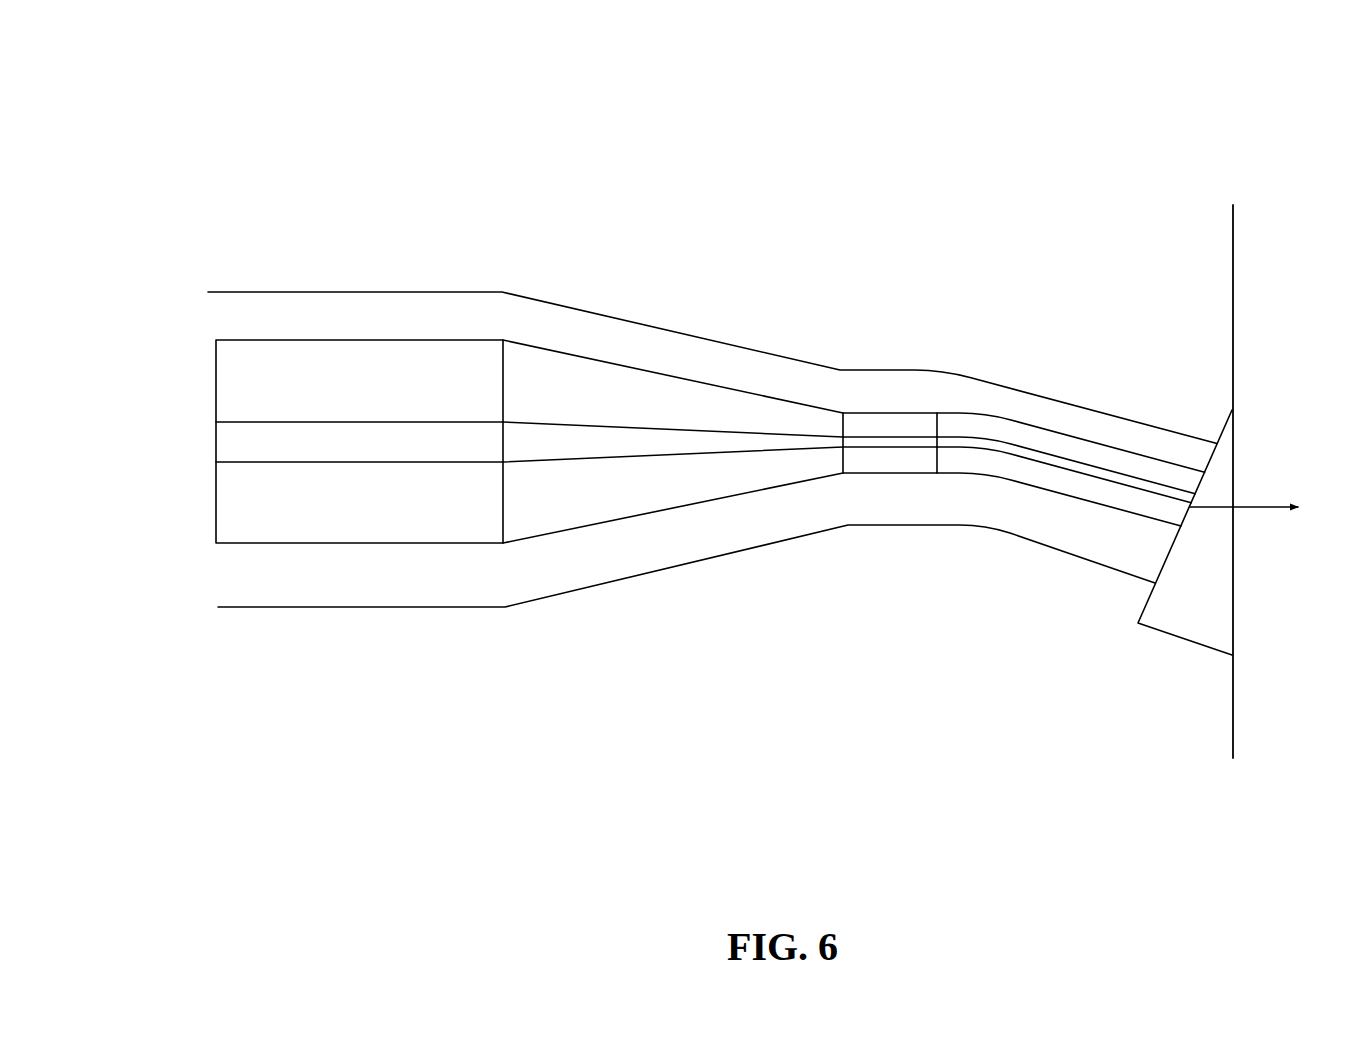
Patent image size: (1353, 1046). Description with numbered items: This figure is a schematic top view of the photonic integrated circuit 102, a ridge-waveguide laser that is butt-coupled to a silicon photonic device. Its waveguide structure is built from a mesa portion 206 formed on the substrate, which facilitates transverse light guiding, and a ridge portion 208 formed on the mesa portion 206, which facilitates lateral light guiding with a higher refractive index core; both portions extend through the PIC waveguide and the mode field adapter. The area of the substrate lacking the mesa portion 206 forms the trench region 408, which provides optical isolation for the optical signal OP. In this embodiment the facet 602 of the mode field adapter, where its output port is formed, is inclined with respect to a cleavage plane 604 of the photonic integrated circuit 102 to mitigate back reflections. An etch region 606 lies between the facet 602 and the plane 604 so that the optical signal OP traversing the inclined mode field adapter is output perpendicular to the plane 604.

The photonic integrated circuit 102 is at (152, 97).
The mesa portion 206 is at (600, 482).
The ridge portion 208 is at (335, 438).
The trench region 408 is at (360, 308).
The facet 602 is at (1202, 467).
The plane 604 is at (1232, 300).
The etch region 606 is at (1205, 622).